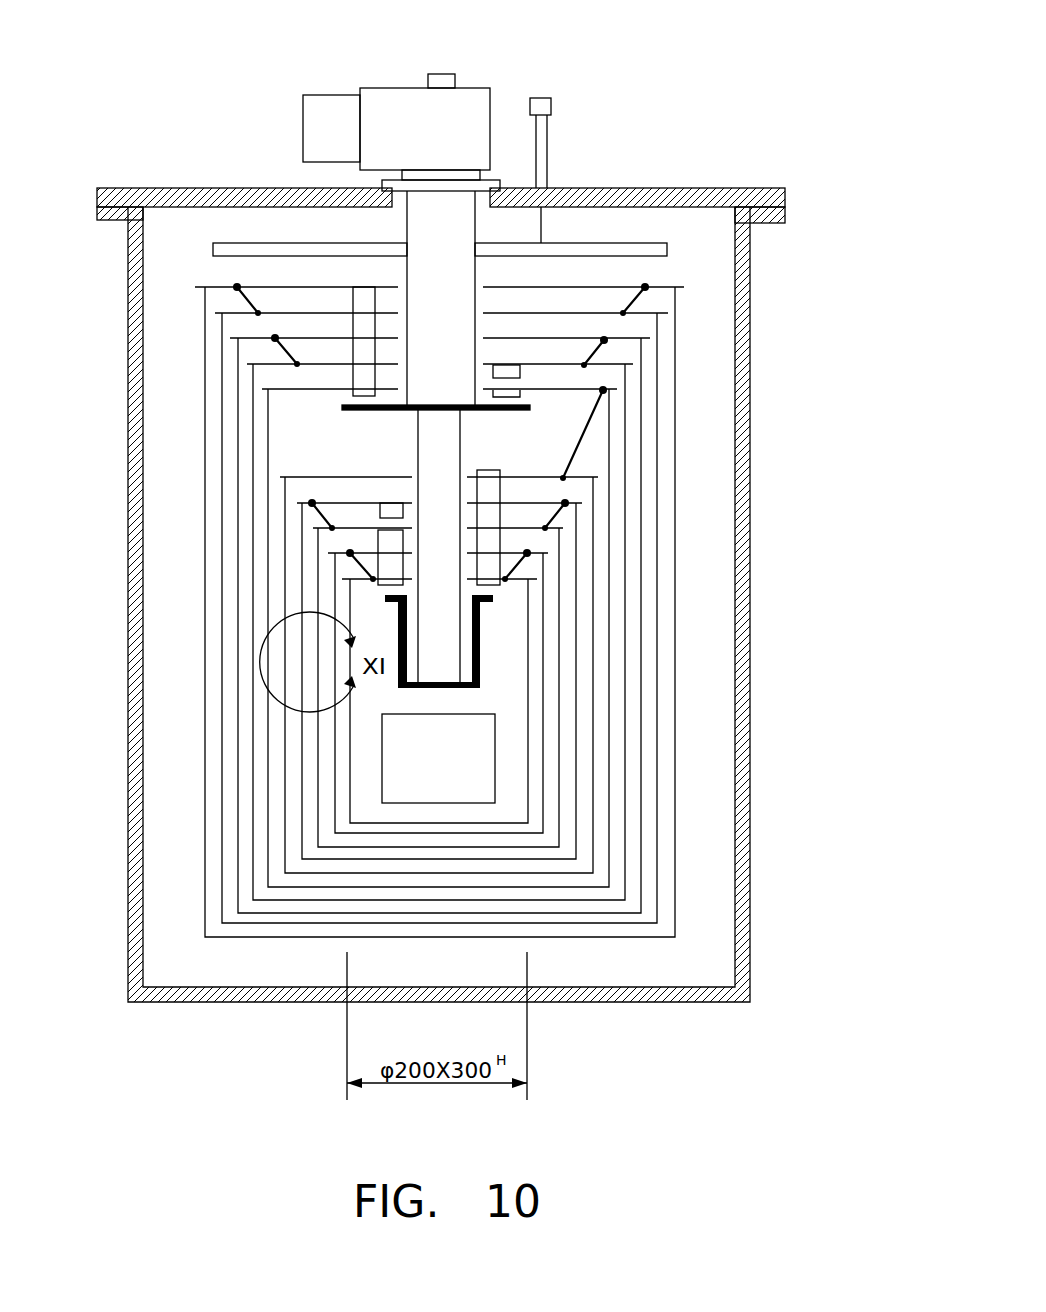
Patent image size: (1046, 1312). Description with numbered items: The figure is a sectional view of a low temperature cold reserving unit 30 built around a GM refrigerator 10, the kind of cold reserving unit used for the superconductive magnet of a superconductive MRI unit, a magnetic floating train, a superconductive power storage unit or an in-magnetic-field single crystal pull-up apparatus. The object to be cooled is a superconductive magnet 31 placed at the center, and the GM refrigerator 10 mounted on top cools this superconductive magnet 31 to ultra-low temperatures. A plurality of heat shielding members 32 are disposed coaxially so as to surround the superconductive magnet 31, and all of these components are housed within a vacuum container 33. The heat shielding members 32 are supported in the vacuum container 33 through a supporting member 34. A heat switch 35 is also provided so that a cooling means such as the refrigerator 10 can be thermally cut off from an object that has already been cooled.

The GM refrigerator 10 is at (472, 105).
The low temperature cold reserving unit 30 is at (235, 120).
The superconductive magnet 31 is at (380, 782).
The heat shielding members 32 is at (527, 731).
The vacuum container 33 is at (687, 1003).
The supporting member 34 is at (623, 302).
The heat switch 35 is at (495, 590).